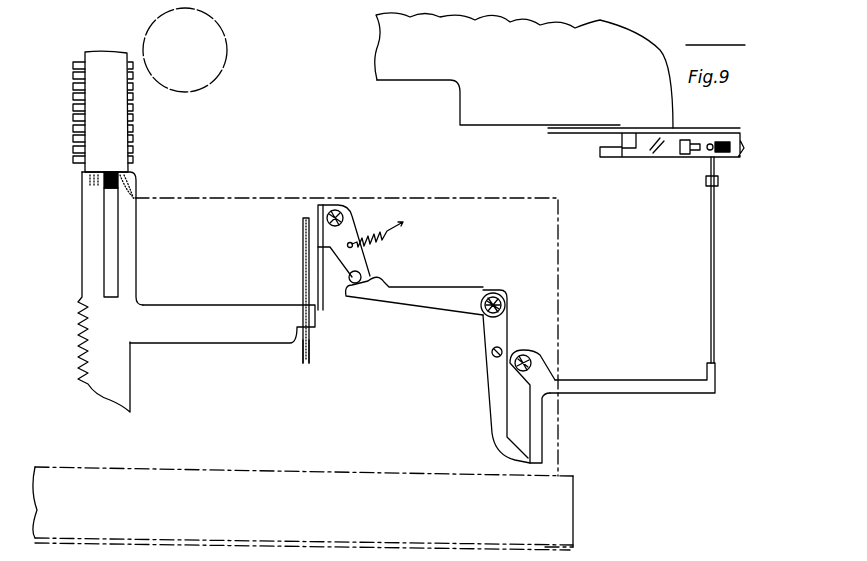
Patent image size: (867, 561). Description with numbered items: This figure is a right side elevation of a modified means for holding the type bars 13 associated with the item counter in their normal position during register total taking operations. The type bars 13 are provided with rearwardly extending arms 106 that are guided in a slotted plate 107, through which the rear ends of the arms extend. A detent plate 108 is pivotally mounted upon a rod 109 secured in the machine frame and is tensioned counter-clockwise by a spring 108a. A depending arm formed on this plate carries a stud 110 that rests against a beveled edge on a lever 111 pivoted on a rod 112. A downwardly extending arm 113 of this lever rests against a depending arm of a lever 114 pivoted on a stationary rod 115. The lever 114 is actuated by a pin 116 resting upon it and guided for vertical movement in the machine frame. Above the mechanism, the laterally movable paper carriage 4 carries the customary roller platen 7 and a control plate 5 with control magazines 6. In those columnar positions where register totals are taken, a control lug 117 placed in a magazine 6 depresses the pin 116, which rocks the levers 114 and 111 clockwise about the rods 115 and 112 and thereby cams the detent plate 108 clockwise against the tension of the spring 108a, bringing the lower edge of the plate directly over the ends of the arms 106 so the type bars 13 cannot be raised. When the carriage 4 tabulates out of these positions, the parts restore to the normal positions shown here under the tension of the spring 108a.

The paper carriage 4 is at (377, 60).
The control plate 5 is at (690, 132).
The control magazines 6 is at (727, 142).
The roller platen 7 is at (222, 25).
The type bars 13 is at (130, 246).
The rearwardly extending arms 106 is at (215, 310).
The slotted plate 107 is at (303, 360).
The detent plate 108 is at (303, 268).
The spring 108a is at (368, 233).
The rod 109 is at (337, 210).
The stud 110 is at (361, 276).
The lever 111 is at (455, 312).
The rod 112 is at (500, 295).
The downwardly extending arm 113 is at (492, 426).
The lever 114 is at (617, 388).
The stationary rod 115 is at (532, 363).
The pin 116 is at (710, 296).
The control lug 117 is at (708, 163).